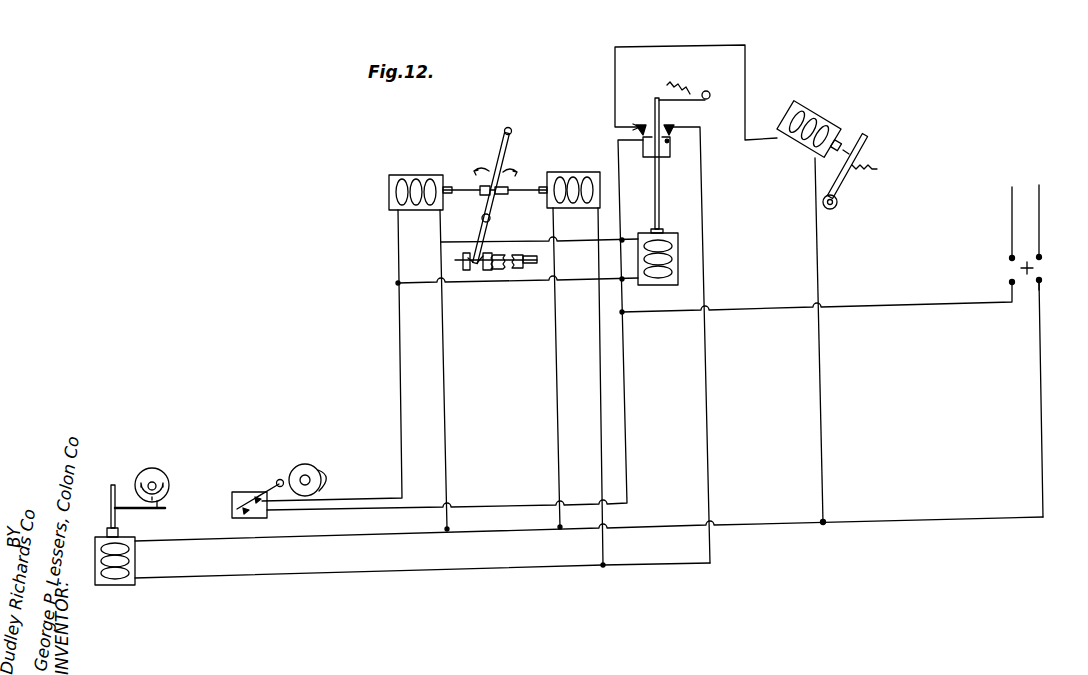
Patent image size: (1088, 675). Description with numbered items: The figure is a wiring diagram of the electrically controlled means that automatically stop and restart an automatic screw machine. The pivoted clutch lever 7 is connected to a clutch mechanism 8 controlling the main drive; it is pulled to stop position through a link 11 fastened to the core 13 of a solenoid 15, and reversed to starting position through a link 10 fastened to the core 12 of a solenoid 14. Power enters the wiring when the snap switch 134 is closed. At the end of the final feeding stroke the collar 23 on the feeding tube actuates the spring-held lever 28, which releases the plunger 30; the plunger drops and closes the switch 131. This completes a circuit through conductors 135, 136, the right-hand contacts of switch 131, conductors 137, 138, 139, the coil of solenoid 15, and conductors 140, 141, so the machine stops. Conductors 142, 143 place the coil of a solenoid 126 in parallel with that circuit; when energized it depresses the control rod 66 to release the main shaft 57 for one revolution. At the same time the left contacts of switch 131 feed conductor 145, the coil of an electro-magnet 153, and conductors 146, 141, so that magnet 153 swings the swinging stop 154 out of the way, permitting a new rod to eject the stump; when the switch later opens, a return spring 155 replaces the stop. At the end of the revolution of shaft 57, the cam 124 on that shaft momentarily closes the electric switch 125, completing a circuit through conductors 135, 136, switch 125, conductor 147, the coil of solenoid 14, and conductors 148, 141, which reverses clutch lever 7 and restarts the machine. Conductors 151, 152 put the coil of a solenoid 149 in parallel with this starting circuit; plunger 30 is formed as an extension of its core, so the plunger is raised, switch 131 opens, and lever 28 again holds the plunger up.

The clutch lever 7 is at (512, 140).
The clutch mechanism 8 is at (497, 266).
The link 10 is at (487, 193).
The link 11 is at (503, 196).
The core 12 is at (495, 176).
The core 13 is at (520, 187).
The solenoid 14 is at (425, 185).
The solenoid 15 is at (573, 177).
The collar 23 is at (709, 93).
The spring-held lever 28 is at (662, 97).
The plunger 30 is at (659, 213).
The main shaft 57 is at (305, 476).
The control rod 66 is at (111, 488).
The cam 124 is at (322, 478).
The electric switch 125 is at (252, 488).
The solenoid 126 is at (118, 574).
The switch 131 is at (670, 150).
The snap switch 134 is at (1047, 237).
The conductor 135 is at (850, 305).
The conductor 136 is at (621, 210).
The conductor 137 is at (713, 371).
The conductor 138 is at (662, 563).
The conductor 139 is at (601, 396).
The conductor 140 is at (555, 357).
The conductor 141 is at (1042, 368).
The conductor 142 is at (195, 535).
The conductor 143 is at (327, 573).
The conductor 145 is at (727, 43).
The conductor 146 is at (823, 399).
The conductor 147 is at (399, 327).
The conductor 148 is at (445, 408).
The solenoid 149 is at (678, 264).
The conductor 151 is at (581, 245).
The conductor 152 is at (587, 283).
The electro-magnet 153 is at (813, 122).
The swinging stop 154 is at (848, 187).
The return spring 155 is at (877, 172).